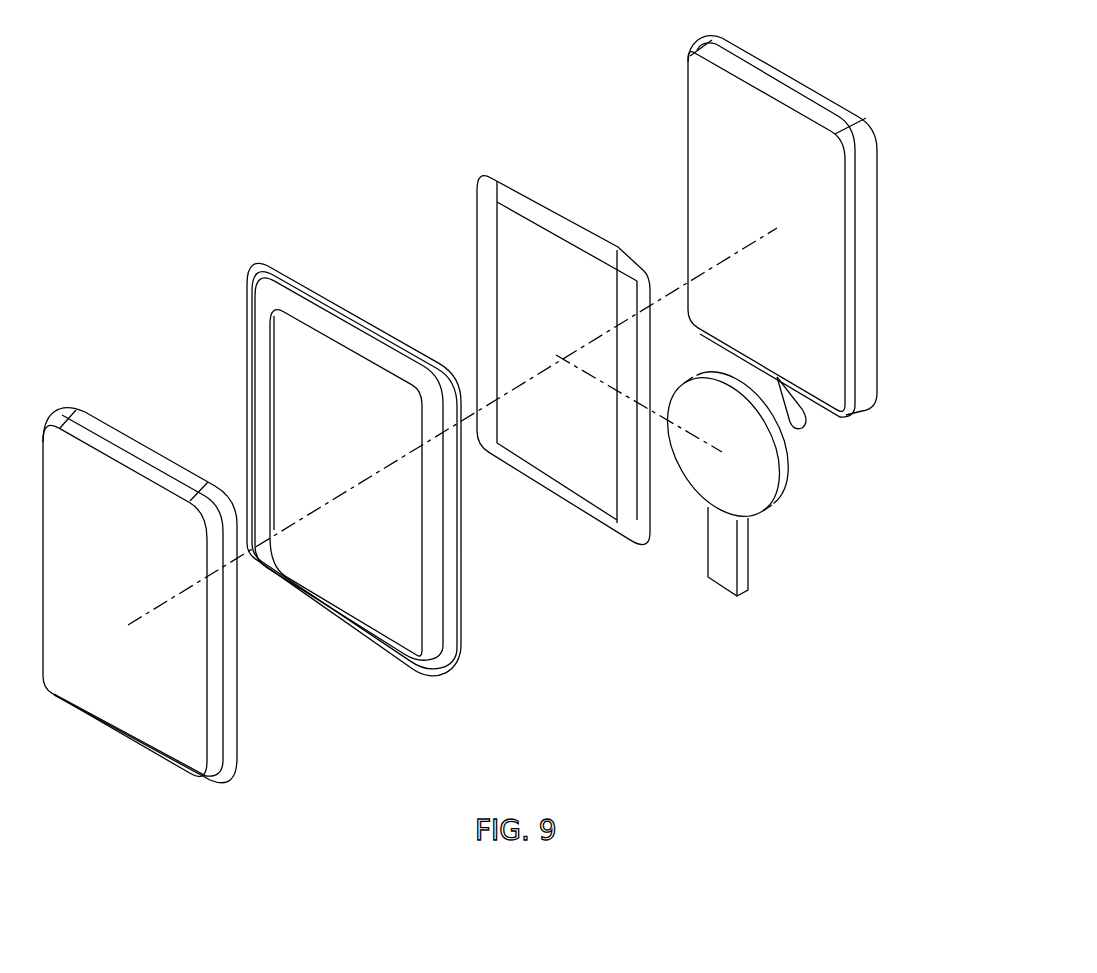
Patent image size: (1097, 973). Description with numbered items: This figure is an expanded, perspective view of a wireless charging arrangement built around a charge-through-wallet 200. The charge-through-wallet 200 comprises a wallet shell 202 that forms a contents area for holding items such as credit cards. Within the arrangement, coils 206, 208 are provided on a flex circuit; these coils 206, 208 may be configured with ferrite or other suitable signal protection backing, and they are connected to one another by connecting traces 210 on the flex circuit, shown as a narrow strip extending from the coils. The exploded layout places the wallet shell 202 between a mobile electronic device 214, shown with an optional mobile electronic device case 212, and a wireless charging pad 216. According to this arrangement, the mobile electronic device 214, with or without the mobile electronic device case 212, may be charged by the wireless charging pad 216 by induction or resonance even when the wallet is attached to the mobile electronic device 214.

The charge-through-wallet 200 is at (438, 172).
The wallet shell 202 is at (478, 247).
The coil 206 is at (803, 447).
The coil 208 is at (787, 477).
The connecting traces 210 is at (732, 568).
The mobile electronic device case 212 is at (258, 290).
The mobile electronic device 214 is at (230, 728).
The wireless charging pad 216 is at (703, 103).